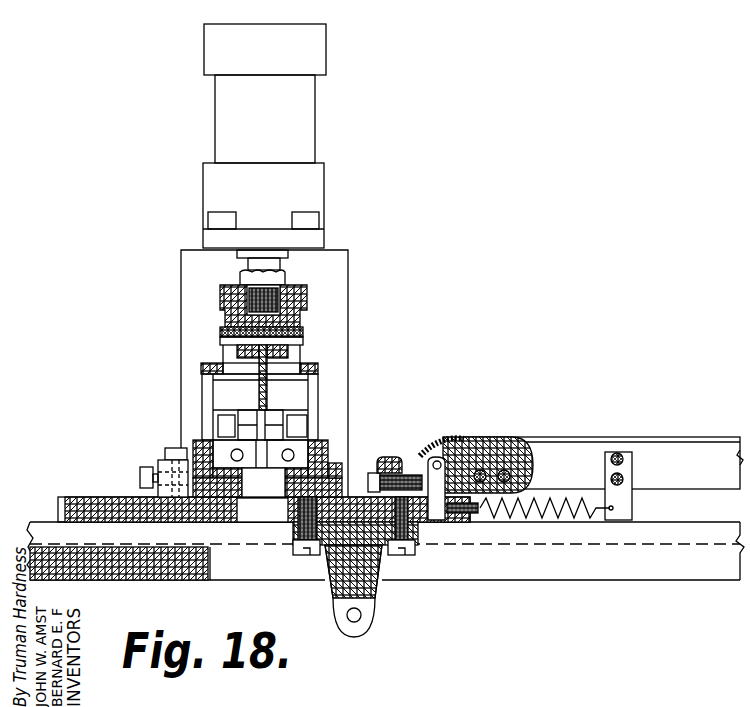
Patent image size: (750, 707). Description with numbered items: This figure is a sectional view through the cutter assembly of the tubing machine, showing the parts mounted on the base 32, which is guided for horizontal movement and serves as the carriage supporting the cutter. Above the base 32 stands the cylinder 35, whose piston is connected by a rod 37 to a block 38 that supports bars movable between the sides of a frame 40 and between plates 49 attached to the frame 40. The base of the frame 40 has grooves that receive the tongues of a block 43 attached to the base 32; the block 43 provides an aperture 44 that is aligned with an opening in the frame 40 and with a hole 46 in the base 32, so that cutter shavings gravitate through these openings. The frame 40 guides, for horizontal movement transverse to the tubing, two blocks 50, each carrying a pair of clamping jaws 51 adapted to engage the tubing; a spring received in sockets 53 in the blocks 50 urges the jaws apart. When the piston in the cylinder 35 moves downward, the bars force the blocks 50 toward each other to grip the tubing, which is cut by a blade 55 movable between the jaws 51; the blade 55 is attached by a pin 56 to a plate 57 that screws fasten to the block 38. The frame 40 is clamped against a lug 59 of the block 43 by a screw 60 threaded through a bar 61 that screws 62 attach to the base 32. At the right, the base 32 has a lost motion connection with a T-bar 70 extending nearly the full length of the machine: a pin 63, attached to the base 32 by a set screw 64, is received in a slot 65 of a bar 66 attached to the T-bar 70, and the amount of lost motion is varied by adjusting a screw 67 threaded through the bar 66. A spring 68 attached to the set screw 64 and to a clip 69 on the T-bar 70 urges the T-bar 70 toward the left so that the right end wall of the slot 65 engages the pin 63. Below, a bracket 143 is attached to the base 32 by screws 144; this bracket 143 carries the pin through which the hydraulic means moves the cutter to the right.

The base 32 is at (105, 505).
The cylinder 35 is at (311, 115).
The rod 37 is at (272, 263).
The block 38 is at (230, 292).
The frame 40 is at (201, 393).
The block 43 is at (343, 478).
The aperture 44 is at (262, 510).
The hole 46 is at (272, 515).
The plates 49 is at (212, 365).
The blocks 50 is at (222, 414).
The clamping jaws 51 is at (247, 412).
The sockets 53 is at (205, 525).
The blade 55 is at (300, 385).
The pin 56 is at (305, 333).
The plate 57 is at (222, 330).
The lug 59 is at (347, 465).
The screw 60 is at (140, 476).
The bar 61 is at (160, 464).
The screws 62 is at (170, 450).
The pin 63 is at (450, 470).
The set screw 64 is at (481, 521).
The slot 65 is at (424, 468).
The bar 66 is at (462, 470).
The screw 67 is at (390, 457).
The spring 68 is at (535, 518).
The clip 69 is at (634, 507).
The T-bar 70 is at (693, 441).
The bracket 143 is at (365, 590).
The screws 144 is at (400, 556).